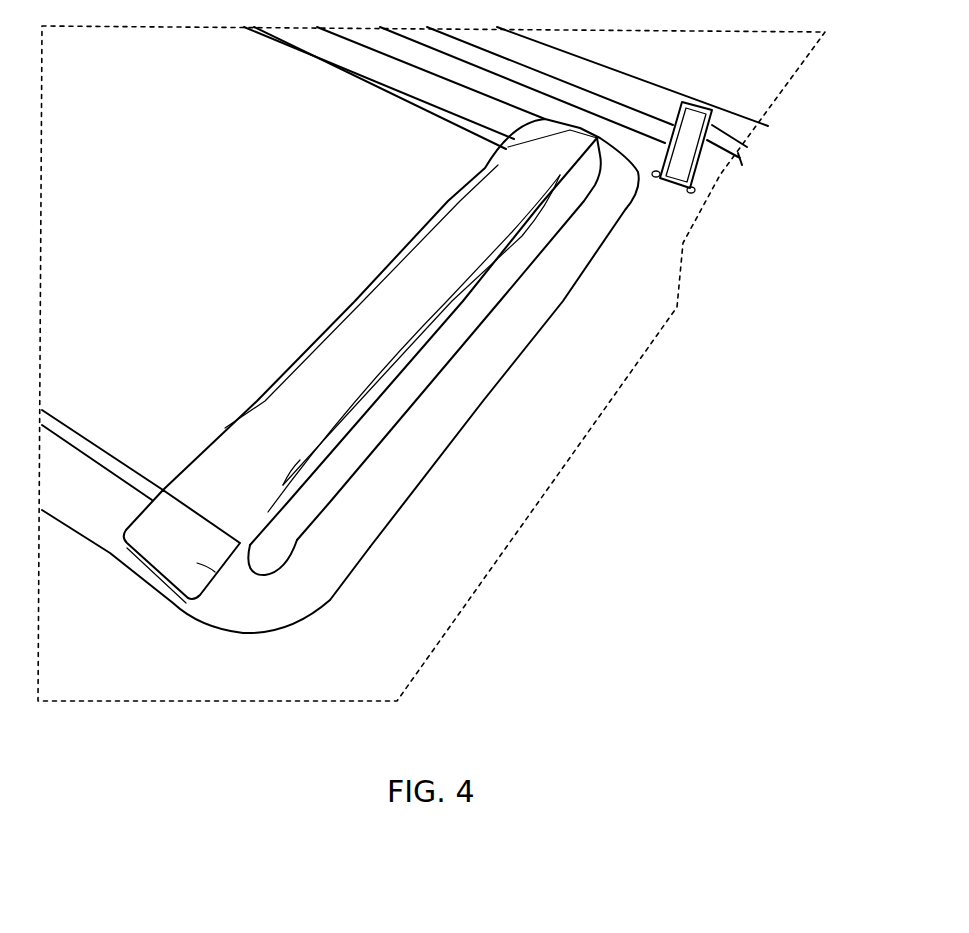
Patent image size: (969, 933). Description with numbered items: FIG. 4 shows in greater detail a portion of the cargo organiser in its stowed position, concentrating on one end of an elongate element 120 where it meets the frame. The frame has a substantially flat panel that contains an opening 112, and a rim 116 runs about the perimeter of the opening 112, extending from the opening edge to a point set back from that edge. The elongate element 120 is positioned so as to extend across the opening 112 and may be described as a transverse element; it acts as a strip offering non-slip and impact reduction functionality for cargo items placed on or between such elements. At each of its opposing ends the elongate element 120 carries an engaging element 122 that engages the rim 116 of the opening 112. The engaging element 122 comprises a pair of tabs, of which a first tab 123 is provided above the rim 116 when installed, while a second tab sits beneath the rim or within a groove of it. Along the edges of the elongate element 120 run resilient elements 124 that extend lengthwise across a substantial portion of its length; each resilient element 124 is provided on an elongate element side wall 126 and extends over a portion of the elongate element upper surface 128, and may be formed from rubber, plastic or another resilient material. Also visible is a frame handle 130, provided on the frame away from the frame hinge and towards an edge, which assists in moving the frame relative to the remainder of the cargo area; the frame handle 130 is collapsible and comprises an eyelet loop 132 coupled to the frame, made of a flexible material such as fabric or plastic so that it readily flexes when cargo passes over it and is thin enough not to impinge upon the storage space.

The opening 112 is at (420, 367).
The rim 116 is at (377, 500).
The elongate element 120 is at (420, 296).
The engaging element 122 is at (197, 563).
The first tab 123 is at (508, 147).
The resilient element 124 is at (355, 397).
The side wall 126 is at (525, 223).
The upper surface 128 is at (467, 235).
The frame handle 130 is at (690, 132).
The eyelet loop 132 is at (705, 163).